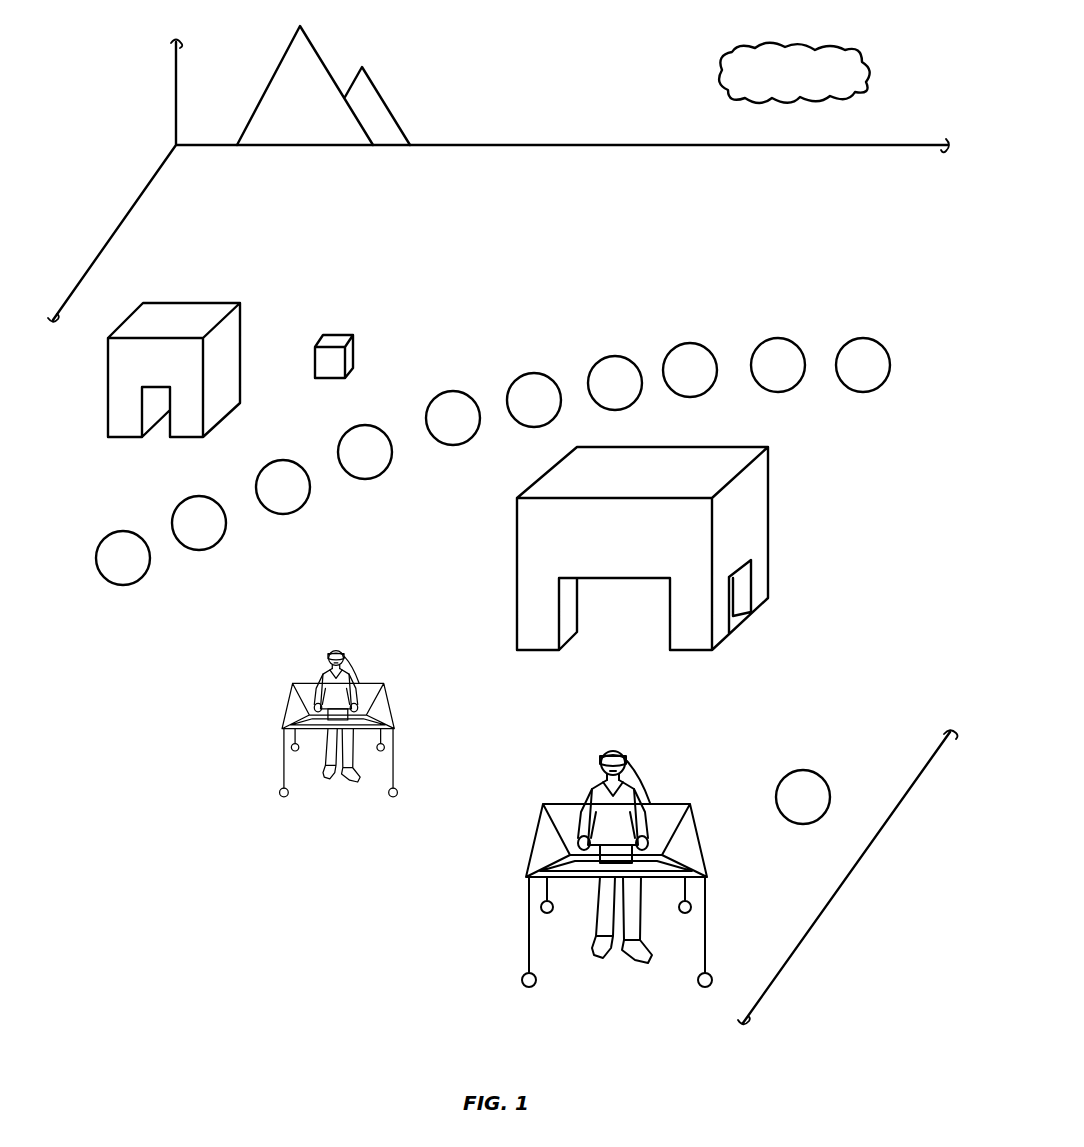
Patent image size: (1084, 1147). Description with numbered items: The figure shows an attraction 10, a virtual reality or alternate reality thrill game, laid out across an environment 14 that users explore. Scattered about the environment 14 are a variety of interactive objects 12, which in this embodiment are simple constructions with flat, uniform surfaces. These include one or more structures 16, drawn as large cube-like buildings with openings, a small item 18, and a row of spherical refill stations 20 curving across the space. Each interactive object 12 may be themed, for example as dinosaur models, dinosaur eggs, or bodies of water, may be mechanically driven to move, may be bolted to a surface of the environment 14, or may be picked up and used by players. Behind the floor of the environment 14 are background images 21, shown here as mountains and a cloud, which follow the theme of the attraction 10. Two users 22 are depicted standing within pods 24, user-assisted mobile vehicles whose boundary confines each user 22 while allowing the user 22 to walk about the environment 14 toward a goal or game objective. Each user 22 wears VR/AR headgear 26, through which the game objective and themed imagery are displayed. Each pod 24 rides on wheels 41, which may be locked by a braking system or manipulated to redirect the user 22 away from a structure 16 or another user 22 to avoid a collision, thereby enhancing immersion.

The attraction 10 is at (818, 218).
The interactive objects 12 is at (501, 565).
The environment 14 is at (499, 690).
The structures 16 is at (243, 352).
The items 18 is at (355, 347).
The refill stations 20 is at (119, 584).
The background images 21 is at (345, 43).
The users 22 is at (476, 791).
The pods 24 is at (516, 845).
The VR/AR headgear 26 is at (605, 749).
The wheels 41 is at (531, 986).